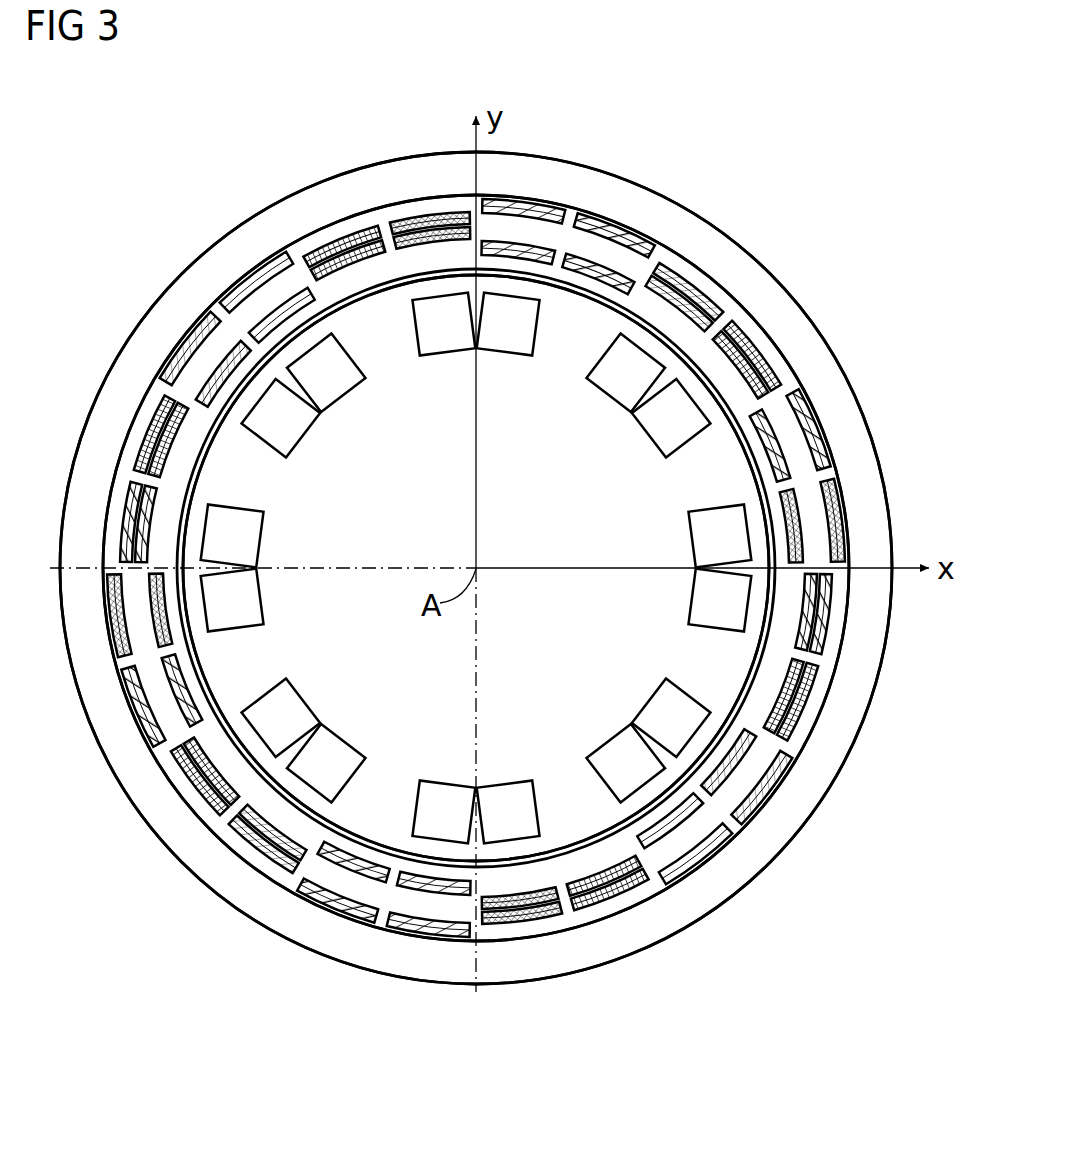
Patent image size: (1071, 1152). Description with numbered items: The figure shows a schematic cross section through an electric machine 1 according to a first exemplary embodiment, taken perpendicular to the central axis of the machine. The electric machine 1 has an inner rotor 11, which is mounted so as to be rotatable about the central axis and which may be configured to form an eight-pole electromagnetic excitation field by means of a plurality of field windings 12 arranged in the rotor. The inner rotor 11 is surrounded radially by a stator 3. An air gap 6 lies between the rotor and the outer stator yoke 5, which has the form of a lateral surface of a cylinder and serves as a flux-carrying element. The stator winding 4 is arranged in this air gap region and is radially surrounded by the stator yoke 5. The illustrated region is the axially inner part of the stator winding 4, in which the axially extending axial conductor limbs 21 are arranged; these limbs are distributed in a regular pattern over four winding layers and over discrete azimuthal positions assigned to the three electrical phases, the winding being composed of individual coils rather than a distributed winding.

The electric machine 1 is at (225, 120).
The stator 3 is at (786, 280).
The stator winding 4 is at (339, 221).
The stator yoke 5 is at (707, 235).
The air gap 6 is at (600, 312).
The inner rotor 11 is at (390, 466).
The field windings 12 is at (617, 378).
The axial conductor limbs 21 is at (598, 253).